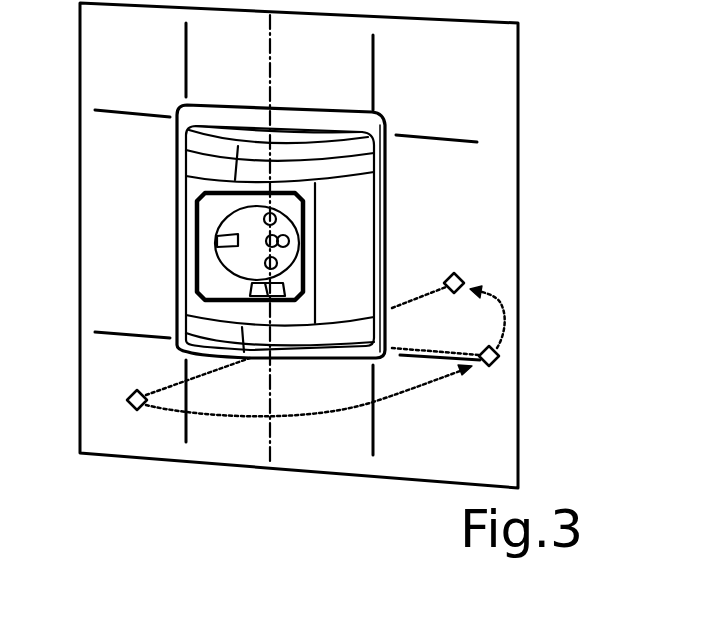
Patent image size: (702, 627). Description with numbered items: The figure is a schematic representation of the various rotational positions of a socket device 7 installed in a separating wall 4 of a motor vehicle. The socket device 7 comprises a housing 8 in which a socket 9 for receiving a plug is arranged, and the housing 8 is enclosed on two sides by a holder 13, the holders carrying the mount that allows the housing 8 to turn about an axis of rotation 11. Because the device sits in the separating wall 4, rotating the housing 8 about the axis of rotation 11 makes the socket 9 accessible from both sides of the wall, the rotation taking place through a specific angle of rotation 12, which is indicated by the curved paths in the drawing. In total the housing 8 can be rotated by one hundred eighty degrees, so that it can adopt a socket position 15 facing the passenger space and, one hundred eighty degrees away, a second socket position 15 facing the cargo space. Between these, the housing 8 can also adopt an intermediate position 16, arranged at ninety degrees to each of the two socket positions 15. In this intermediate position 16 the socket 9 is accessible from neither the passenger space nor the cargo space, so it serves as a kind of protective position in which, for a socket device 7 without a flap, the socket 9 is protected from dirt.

The separating wall 4 is at (108, 182).
The socket device 7 is at (408, 193).
The housing 8 is at (357, 266).
The socket 9 is at (205, 283).
The axis of rotation 11 is at (272, 424).
The angle of rotation 12 is at (220, 417).
The holder 13 is at (372, 128).
The socket position 15 is at (128, 398).
The intermediate position 16 is at (498, 355).